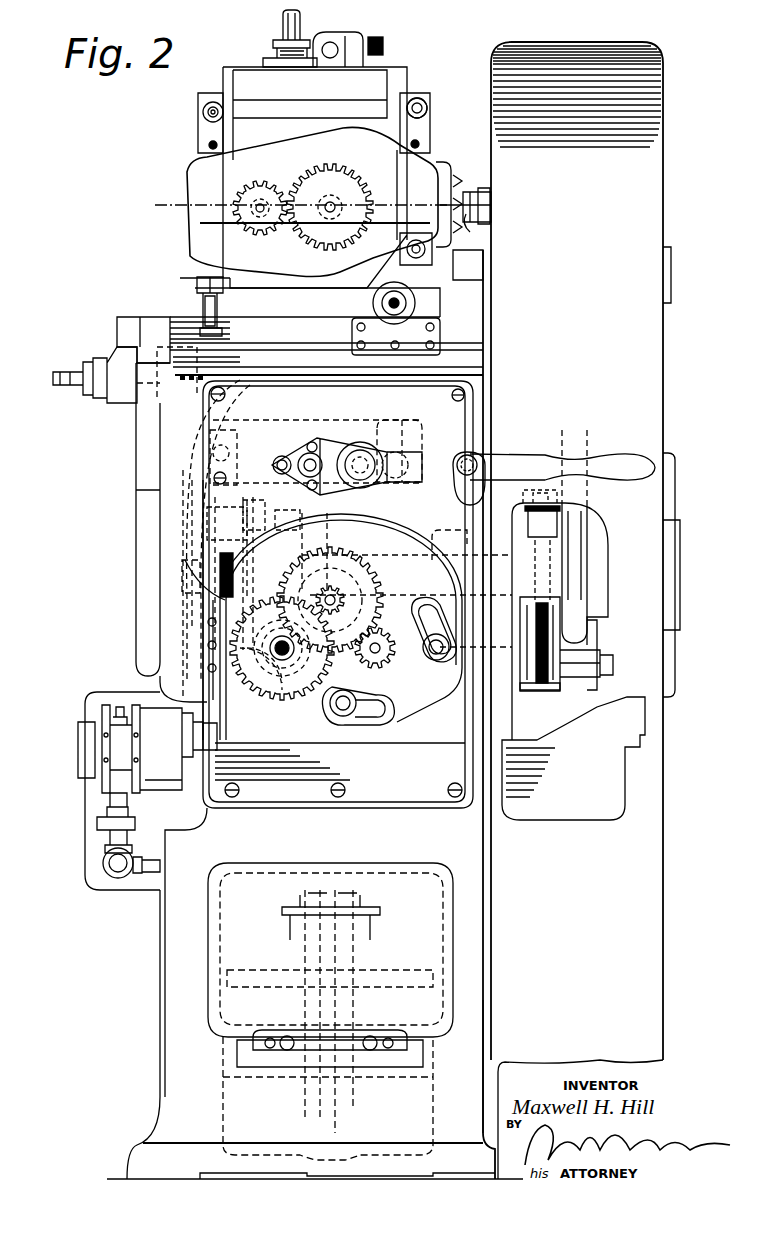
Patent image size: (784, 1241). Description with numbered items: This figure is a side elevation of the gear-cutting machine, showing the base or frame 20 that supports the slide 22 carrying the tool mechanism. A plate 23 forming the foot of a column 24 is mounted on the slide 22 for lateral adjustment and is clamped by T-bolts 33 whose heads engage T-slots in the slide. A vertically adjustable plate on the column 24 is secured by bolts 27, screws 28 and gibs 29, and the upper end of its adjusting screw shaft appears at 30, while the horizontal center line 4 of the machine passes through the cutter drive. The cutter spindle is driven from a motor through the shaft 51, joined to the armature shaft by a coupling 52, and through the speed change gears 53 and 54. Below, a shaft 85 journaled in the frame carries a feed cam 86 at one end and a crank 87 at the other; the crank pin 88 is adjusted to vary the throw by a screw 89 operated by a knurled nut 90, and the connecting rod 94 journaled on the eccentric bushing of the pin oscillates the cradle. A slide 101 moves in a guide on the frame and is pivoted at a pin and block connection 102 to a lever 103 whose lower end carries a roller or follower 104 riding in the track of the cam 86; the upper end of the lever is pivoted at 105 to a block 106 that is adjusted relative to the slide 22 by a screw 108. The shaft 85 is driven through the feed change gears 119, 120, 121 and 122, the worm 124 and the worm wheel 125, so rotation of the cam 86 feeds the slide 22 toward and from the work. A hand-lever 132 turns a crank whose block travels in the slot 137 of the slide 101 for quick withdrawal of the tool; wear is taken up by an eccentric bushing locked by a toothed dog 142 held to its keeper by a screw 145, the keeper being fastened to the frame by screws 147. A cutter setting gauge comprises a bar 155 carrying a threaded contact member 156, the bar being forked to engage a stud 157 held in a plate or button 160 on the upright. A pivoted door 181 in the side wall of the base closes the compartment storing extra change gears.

The center line 4 is at (299, 208).
The base or frame 20 is at (660, 879).
The slide 22 is at (176, 320).
The plate 23 is at (198, 303).
The column 24 is at (306, 177).
The bolts 27 is at (200, 108).
The screws 28 is at (209, 145).
The gibs 29 is at (430, 118).
The adjusting screw shaft 30 is at (283, 26).
The T-bolts 33 is at (200, 282).
The shaft 51 is at (275, 57).
The coupling 52 is at (373, 305).
The speed change gear 53 is at (268, 186).
The speed change gear 54 is at (347, 179).
The shaft 85 is at (443, 531).
The cam 86 is at (200, 652).
The crank 87 is at (537, 689).
The pin 88 is at (523, 660).
The screw 89 is at (520, 612).
The knurled nut 90 is at (523, 494).
The connecting rod 94 is at (576, 575).
The slide 101 is at (278, 432).
The pin and block connection 102 is at (185, 446).
The lever 103 is at (236, 410).
The roller or follower 104 is at (200, 600).
The pivotal connection 105 is at (238, 392).
The block 106 is at (180, 394).
The screw 108 is at (68, 386).
The feed change gear 119 is at (385, 662).
The feed change gear 120 is at (360, 568).
The feed change gear 121 is at (650, 153).
The feed change gear 122 is at (300, 690).
The worm 124 is at (250, 687).
The worm wheel 125 is at (276, 514).
The hand-lever 132 is at (521, 459).
The slot 137 is at (384, 428).
The dog 142 is at (333, 462).
The screw 145 is at (305, 453).
The screws 147 is at (283, 458).
The bar 155 is at (489, 222).
The contact member 156 is at (468, 229).
The stud 157 is at (494, 206).
The plate or button 160 is at (486, 172).
The door 181 is at (425, 890).